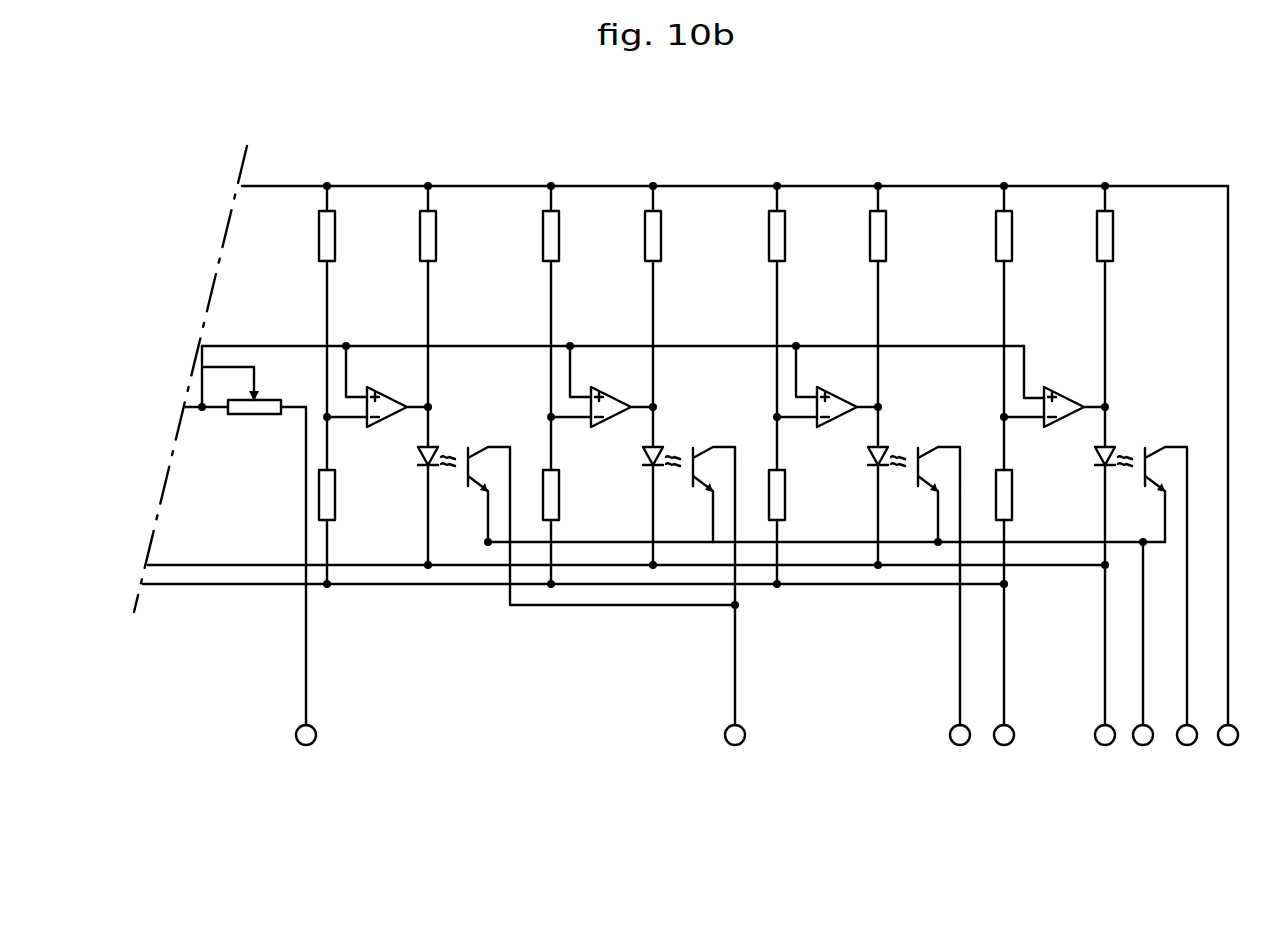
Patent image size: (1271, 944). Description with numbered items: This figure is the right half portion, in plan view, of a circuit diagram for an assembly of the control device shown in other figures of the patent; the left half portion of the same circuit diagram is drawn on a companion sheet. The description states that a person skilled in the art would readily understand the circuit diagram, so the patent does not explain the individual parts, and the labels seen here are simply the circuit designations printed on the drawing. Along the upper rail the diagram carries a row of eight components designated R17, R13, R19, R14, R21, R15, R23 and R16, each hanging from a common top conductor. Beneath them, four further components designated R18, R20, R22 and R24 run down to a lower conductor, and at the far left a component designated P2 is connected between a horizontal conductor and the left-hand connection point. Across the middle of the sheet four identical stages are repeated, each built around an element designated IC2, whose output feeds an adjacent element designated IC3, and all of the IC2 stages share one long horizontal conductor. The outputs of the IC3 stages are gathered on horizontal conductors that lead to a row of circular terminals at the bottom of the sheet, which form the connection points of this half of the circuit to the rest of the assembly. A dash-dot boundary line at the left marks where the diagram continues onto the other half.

The resistor R17 is at (355, 236).
The resistor R13 is at (456, 236).
The resistor R19 is at (579, 236).
The resistor R14 is at (681, 236).
The resistor R21 is at (805, 236).
The resistor R15 is at (906, 236).
The resistor R23 is at (1032, 236).
The resistor R16 is at (1133, 236).
The resistor R18 is at (355, 495).
The resistor R20 is at (579, 495).
The resistor R22 is at (805, 495).
The resistor R24 is at (1032, 495).
The potentiometer P2 is at (245, 535).
The comparator / operational amplifier IC2 is at (716, 386).
The optocoupler IC3 is at (802, 566).